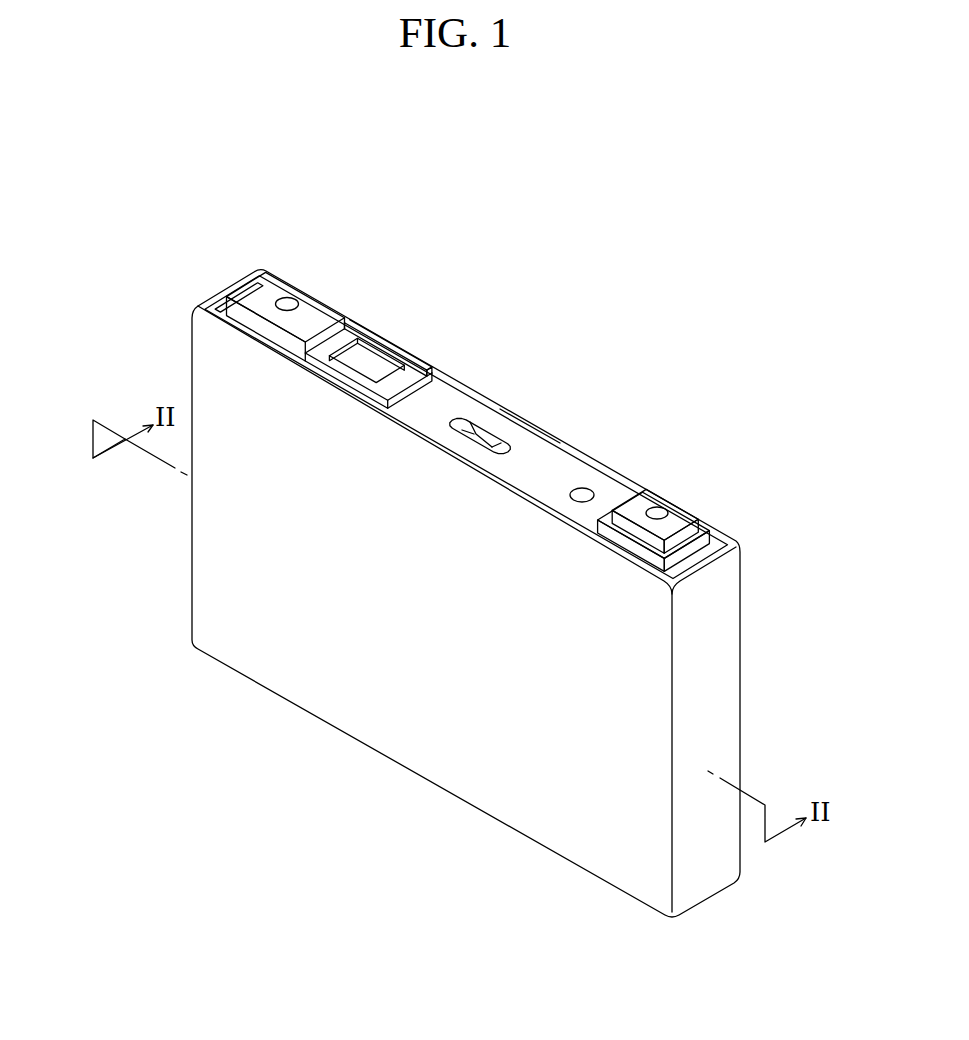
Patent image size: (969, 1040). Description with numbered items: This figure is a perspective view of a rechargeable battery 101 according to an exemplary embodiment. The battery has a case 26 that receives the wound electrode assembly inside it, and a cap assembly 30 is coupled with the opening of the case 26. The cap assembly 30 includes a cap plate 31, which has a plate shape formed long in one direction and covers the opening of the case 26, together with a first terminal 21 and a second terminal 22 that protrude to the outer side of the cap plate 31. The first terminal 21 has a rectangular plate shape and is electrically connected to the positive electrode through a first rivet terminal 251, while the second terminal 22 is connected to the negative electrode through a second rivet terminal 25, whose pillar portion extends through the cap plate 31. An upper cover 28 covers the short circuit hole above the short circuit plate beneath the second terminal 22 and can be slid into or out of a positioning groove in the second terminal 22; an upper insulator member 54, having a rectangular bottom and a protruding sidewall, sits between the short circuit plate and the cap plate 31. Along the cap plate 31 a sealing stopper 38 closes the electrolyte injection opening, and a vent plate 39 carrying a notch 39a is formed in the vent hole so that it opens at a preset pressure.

The rechargeable battery 101 is at (489, 231).
The first terminal 21 is at (683, 515).
The second terminal 22 is at (328, 318).
The second rivet terminal 25 is at (290, 298).
The first rivet terminal 251 is at (660, 508).
The case 26 is at (413, 742).
The upper cover 28 is at (373, 350).
The cap assembly 30 is at (560, 443).
The cap plate 31 is at (444, 398).
The sealing stopper 38 is at (584, 489).
The vent plate 39 is at (481, 416).
The notch 39a is at (492, 437).
The upper insulator member 54 is at (413, 352).